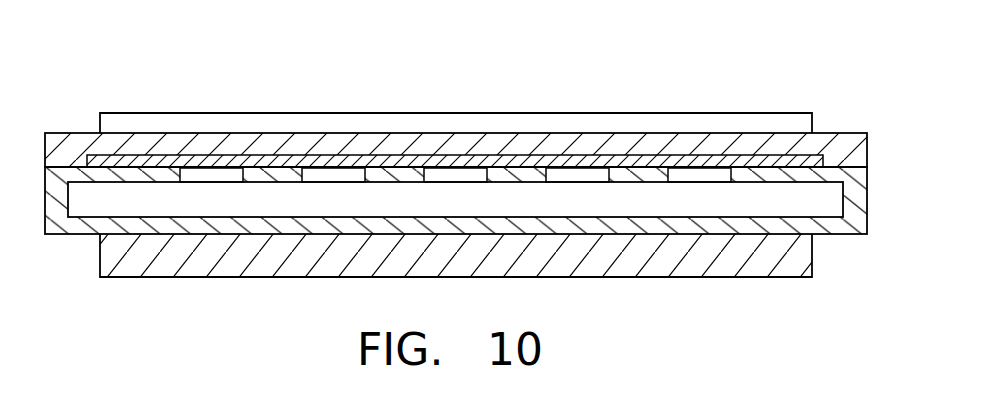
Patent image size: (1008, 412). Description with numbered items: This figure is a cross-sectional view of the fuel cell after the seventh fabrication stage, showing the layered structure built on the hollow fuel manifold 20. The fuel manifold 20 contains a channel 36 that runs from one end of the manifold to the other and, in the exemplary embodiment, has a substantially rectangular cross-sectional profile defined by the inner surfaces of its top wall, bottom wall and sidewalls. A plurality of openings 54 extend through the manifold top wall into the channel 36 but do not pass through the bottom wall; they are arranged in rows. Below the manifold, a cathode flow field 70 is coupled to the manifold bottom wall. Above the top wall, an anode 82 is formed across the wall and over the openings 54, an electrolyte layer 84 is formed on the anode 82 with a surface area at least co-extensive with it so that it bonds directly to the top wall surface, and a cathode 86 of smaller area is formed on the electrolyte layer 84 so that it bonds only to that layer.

The fuel manifold 20 is at (57, 236).
The channel 36 is at (183, 214).
The openings 54 is at (303, 176).
The cathode flow field 70 is at (319, 277).
The anode 82 is at (336, 168).
The electrolyte layer 84 is at (840, 133).
The cathode 86 is at (530, 112).